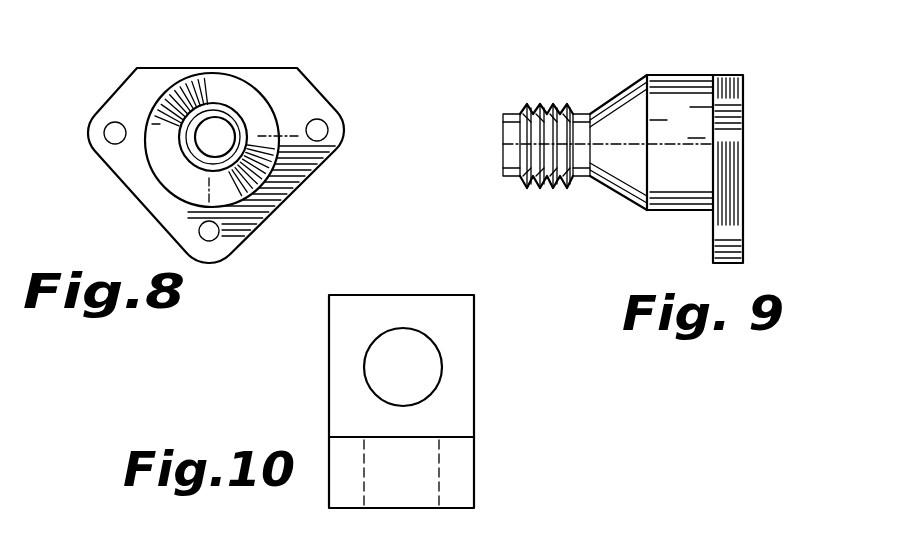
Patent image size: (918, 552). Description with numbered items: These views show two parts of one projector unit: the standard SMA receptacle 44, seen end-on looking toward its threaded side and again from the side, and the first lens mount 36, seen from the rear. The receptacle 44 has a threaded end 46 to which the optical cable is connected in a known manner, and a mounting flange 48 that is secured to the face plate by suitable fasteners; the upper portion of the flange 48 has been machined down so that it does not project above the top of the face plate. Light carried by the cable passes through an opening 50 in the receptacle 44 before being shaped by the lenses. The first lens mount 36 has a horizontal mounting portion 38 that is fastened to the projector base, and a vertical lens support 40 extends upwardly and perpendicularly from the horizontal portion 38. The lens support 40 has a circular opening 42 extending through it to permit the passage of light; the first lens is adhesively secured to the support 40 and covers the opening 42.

In FIG. 10, the first lens mount 36 is at (457, 367).
In FIG. 10, the horizontal mounting portion 38 is at (476, 477).
In FIG. 10, the vertical lens support 40 is at (442, 332).
In FIG. 10, the circular opening 42 is at (412, 350).
In FIG. 8, the SMA receptacle 44 is at (249, 132).
In FIG. 9, the SMA receptacle 44 is at (677, 154).
In FIG. 8, the threaded end 46 is at (207, 103).
In FIG. 9, the threaded end 46 is at (511, 176).
In FIG. 8, the mounting flange 48 is at (287, 187).
In FIG. 9, the mounting flange 48 is at (731, 223).
In FIG. 8, the opening 50 is at (213, 143).